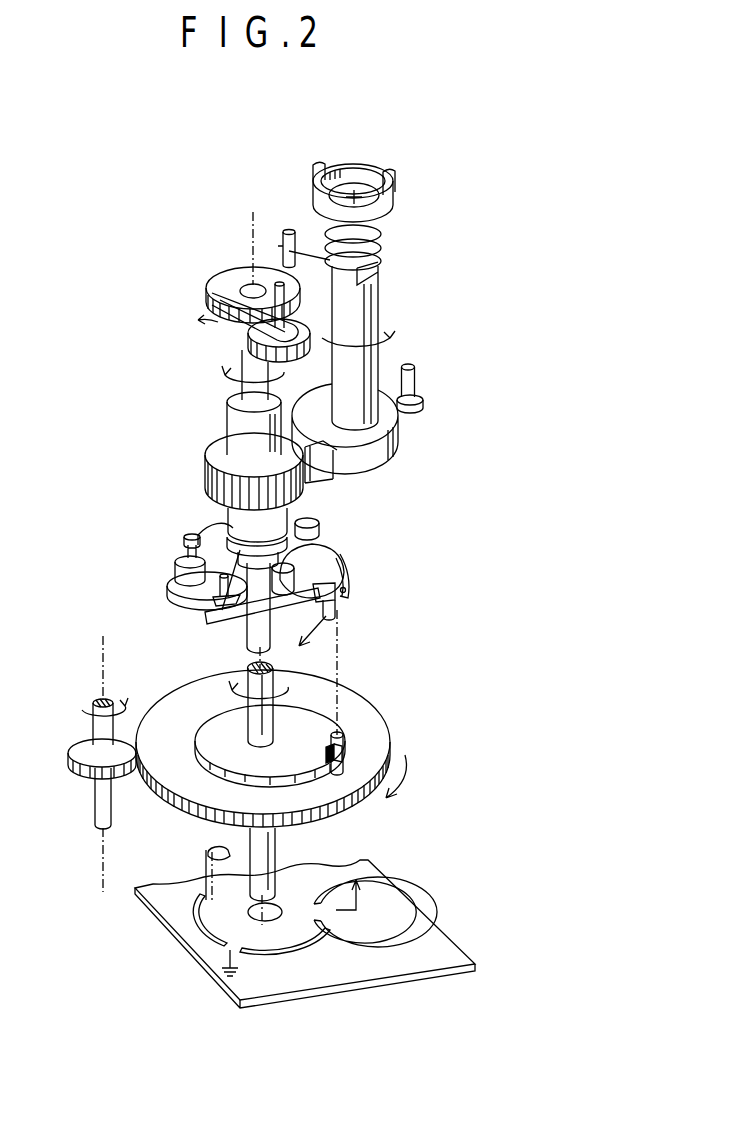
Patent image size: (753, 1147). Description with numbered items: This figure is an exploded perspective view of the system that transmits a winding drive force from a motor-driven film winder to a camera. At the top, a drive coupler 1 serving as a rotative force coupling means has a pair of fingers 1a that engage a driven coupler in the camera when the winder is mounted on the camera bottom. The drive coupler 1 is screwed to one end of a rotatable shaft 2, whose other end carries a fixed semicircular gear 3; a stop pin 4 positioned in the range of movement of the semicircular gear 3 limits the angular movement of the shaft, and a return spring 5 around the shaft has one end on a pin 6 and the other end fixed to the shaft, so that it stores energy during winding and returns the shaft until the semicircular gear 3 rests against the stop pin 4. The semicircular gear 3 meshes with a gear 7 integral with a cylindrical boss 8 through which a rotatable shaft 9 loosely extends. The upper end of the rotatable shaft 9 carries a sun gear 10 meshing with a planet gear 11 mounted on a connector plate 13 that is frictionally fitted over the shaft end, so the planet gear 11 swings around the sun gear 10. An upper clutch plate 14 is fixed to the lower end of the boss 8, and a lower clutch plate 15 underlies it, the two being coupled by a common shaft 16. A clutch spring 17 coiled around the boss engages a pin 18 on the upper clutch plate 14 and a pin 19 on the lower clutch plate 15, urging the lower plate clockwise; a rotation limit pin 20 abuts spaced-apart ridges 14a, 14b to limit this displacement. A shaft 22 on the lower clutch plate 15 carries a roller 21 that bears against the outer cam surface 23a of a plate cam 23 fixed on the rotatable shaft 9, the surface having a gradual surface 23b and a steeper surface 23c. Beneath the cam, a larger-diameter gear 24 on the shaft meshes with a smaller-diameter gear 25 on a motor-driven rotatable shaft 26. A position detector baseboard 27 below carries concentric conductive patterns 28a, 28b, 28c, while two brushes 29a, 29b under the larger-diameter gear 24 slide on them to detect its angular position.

The drive coupler 1 is at (336, 172).
The fingers 1a is at (319, 170).
The rotatable shaft 2 is at (371, 309).
The semicircular gear 3 is at (322, 466).
The stop pin 4 is at (424, 394).
The return spring 5 is at (382, 248).
The pin 6 is at (287, 231).
The gear 7 is at (215, 456).
The cylindrical boss 8 is at (235, 421).
The rotatable shaft 9 is at (244, 366).
The sun gear 10 is at (226, 277).
The planet gear 11 is at (256, 348).
The connector plate 13 is at (232, 300).
The upper clutch plate 14 is at (312, 548).
The ridge 14a is at (262, 592).
The ridge 14b is at (339, 604).
The lower clutch plate 15 is at (347, 574).
The common shaft 16 is at (316, 528).
The clutch spring 17 is at (226, 538).
The pin 18 is at (183, 574).
The pin 19 is at (188, 590).
The rotation limit pin 20 is at (296, 574).
The roller 21 is at (334, 618).
The shaft 22 is at (347, 591).
The plate cam 23 is at (295, 712).
The outer cam surface 23a is at (233, 783).
The gradual surface 23b is at (330, 722).
The steeper surface 23c is at (345, 753).
The larger-diameter gear 24 is at (332, 814).
The smaller-diameter gear 25 is at (80, 770).
The rotatable shaft 26 is at (98, 729).
The position detector baseboard 27 is at (400, 906).
The conductive pattern 28a is at (330, 925).
The conductive pattern 28b is at (205, 938).
The conductive pattern 28c is at (300, 940).
The brush 29a is at (208, 850).
The brush 29b is at (206, 860).